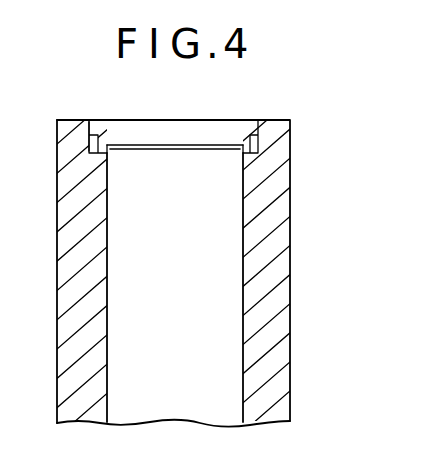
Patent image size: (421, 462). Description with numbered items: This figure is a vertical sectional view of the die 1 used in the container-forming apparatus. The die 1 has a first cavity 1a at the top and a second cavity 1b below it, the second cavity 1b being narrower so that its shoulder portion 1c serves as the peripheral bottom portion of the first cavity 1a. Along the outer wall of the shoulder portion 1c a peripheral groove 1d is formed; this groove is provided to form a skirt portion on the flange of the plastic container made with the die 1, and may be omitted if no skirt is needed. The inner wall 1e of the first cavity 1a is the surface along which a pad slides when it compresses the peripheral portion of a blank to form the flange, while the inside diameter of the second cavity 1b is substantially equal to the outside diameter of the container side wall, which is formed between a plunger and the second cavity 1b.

The die 1 is at (297, 272).
The first cavity 1a is at (222, 135).
The second cavity 1b is at (160, 193).
The shoulder portion 1c is at (97, 150).
The peripheral groove 1d is at (88, 140).
The inner wall 1e is at (262, 140).